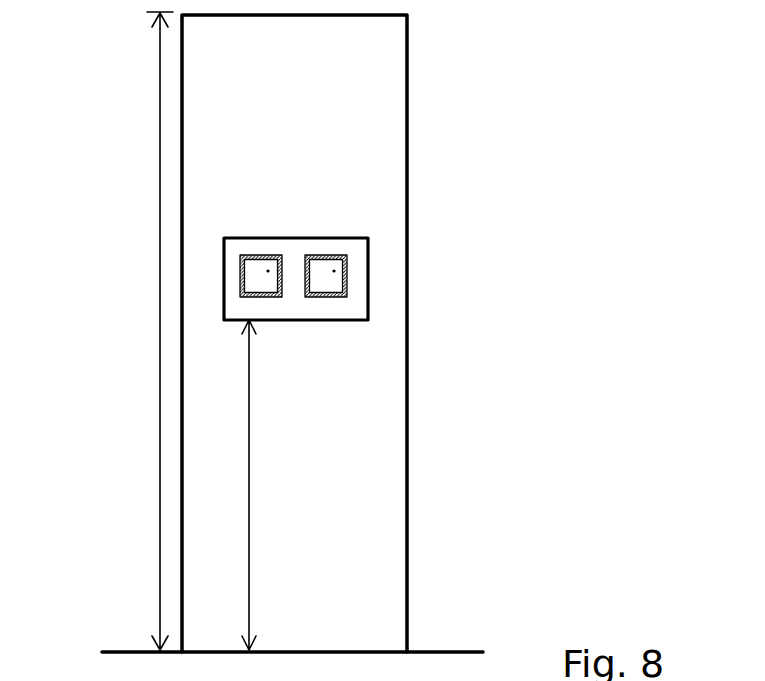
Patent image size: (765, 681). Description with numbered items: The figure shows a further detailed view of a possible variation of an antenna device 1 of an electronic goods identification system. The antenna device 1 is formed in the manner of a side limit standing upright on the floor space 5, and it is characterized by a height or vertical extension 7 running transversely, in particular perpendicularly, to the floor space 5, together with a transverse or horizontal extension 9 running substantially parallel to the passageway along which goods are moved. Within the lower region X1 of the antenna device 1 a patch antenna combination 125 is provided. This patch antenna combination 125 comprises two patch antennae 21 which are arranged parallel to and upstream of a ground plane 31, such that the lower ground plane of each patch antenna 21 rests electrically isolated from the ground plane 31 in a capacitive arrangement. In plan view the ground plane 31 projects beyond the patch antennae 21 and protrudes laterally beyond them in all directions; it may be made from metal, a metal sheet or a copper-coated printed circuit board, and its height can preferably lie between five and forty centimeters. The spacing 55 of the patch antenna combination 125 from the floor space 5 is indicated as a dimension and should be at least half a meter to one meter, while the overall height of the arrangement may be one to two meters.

The antenna device 1 is at (461, 186).
The floor space 5 is at (468, 644).
The height or vertical extension 7 is at (159, 172).
The horizontal extension 9 is at (339, 669).
The lower region X1 is at (118, 289).
The patch antenna combination 125 is at (401, 290).
The patch antenna 21 is at (319, 262).
The ground plane 31 is at (344, 308).
The spacing 55 is at (249, 523).